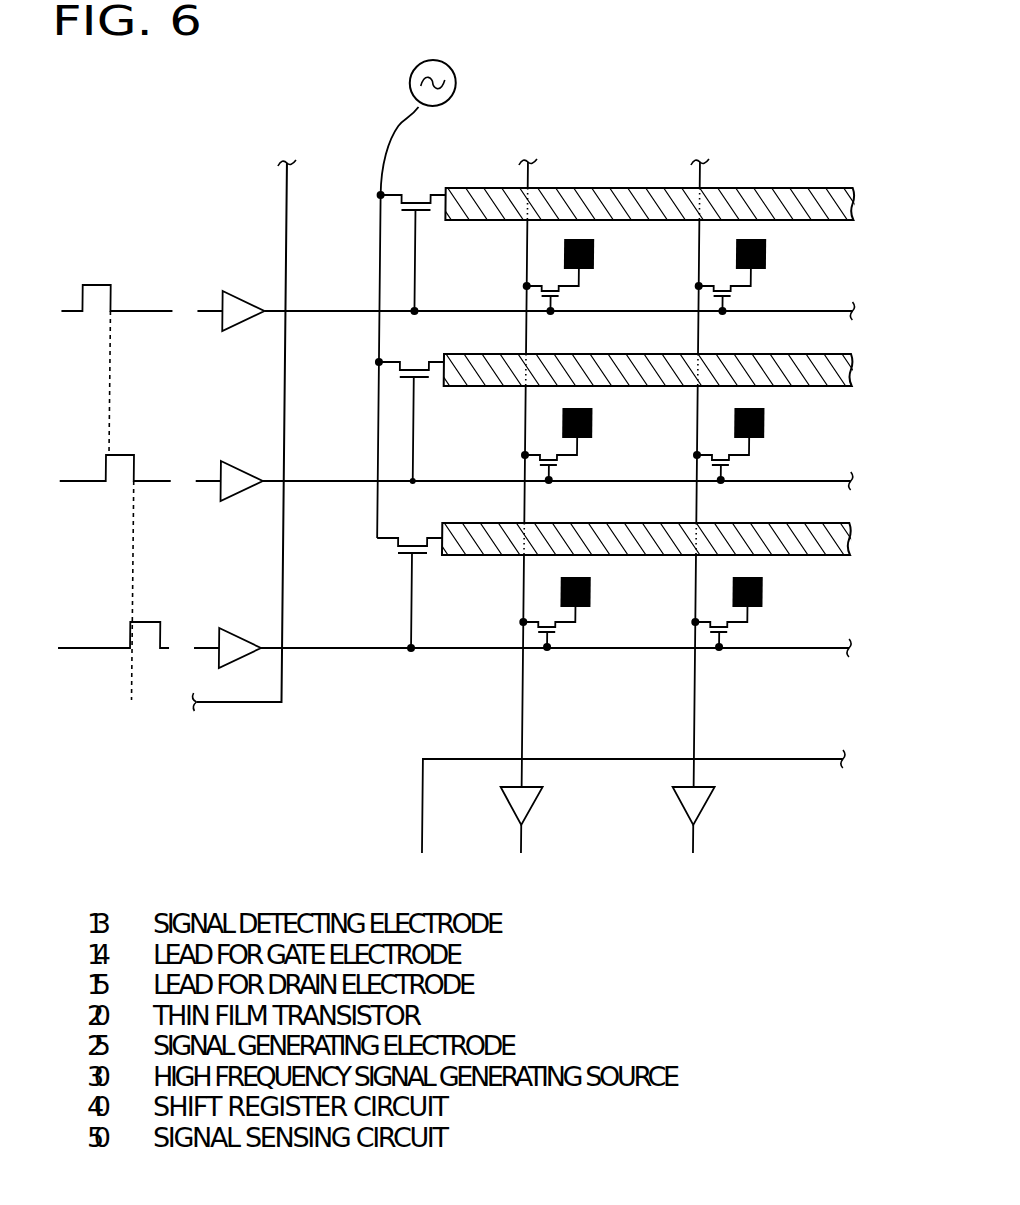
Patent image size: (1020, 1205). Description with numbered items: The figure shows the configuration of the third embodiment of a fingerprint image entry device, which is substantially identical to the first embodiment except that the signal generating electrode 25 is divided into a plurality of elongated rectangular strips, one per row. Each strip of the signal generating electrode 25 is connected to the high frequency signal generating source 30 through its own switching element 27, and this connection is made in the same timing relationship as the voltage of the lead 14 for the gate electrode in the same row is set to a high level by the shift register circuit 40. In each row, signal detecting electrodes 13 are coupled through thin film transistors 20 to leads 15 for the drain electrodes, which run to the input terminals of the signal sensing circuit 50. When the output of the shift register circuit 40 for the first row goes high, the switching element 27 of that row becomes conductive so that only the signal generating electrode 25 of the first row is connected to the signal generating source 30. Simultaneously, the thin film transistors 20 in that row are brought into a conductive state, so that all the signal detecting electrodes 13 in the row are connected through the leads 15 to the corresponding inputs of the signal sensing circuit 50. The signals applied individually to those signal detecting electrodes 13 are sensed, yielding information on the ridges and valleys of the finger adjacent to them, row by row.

The signal detecting electrode 13 is at (766, 254).
The lead for gate electrode 14 is at (354, 311).
The lead for drain electrode 15 is at (704, 717).
The thin film transistor 20 is at (743, 298).
The signal generating electrode 25 is at (767, 190).
The switching element 27 is at (417, 188).
The high frequency signal generating source 30 is at (409, 77).
The shift register circuit 40 is at (292, 177).
The signal sensing circuit 50 is at (816, 767).